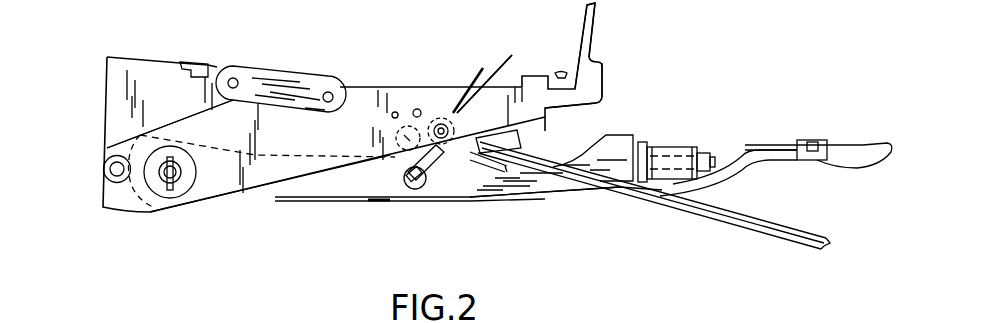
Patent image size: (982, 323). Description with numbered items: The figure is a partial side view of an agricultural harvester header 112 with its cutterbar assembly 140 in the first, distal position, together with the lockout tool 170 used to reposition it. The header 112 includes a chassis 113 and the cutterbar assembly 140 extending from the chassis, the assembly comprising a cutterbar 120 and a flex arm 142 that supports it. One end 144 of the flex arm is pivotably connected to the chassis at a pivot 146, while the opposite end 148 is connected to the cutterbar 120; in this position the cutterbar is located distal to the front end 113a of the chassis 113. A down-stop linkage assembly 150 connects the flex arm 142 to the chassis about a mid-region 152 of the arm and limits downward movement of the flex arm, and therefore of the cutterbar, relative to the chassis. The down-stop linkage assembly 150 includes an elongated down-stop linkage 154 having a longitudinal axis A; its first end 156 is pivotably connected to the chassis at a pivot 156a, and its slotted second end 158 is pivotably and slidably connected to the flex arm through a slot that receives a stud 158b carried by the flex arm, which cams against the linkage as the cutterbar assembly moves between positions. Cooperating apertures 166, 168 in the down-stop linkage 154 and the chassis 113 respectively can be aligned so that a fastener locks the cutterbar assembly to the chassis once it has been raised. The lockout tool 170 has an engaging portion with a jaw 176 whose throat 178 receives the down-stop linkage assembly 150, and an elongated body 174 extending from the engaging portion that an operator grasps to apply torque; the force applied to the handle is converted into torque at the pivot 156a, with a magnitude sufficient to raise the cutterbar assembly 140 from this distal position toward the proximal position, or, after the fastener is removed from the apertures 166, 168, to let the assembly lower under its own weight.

The agricultural harvester header 112 is at (89, 56).
The chassis 113 is at (99, 117).
The front end of the chassis 113a is at (597, 60).
The cutterbar 120 is at (823, 140).
The cutterbar assembly 140 is at (500, 216).
The flex arm 142 is at (533, 188).
The one end of the flex arm 144 is at (273, 200).
The pivot 146 is at (178, 182).
The opposite end of the flex arm 148 is at (660, 147).
The down-stop linkage assembly 150 is at (438, 213).
The mid-region of the flex arm 152 is at (392, 199).
The down-stop linkage 154 is at (432, 166).
The first end of the down-stop linkage 156 is at (443, 95).
The pivot 156a is at (439, 124).
The slotted second end 158 is at (428, 182).
The stud 158b is at (419, 185).
The aperture in the down-stop linkage 166 is at (408, 133).
The aperture in the chassis 168 is at (414, 110).
The lockout tool 170 is at (639, 213).
The elongated body 174 is at (768, 220).
The jaw 176 is at (465, 115).
The throat 178 is at (455, 124).
The longitudinal axis A is at (489, 72).